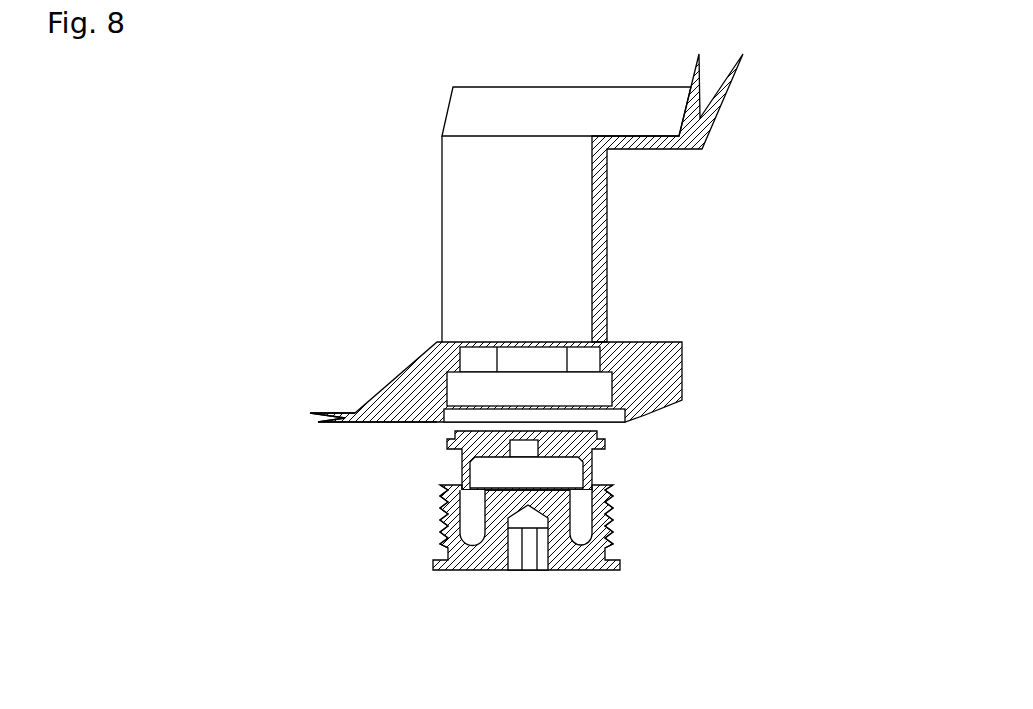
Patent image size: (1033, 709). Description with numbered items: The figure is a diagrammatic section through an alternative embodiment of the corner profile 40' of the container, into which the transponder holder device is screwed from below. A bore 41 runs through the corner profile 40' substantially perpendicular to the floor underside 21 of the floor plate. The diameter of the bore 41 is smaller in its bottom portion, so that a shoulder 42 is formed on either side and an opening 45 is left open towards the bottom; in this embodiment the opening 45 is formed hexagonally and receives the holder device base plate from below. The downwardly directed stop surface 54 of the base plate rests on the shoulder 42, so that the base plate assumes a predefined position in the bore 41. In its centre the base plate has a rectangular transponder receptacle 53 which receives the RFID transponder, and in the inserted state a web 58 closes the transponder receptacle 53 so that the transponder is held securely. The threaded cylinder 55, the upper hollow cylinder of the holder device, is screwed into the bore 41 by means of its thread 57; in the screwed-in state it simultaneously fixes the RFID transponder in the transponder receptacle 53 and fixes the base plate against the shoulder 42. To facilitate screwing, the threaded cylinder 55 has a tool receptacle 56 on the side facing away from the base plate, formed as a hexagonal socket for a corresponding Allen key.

The corner profile 40' is at (511, 198).
The opening 45 is at (588, 354).
The shoulder 42 is at (608, 363).
The bore 41 is at (602, 399).
The stop surface 54 is at (443, 418).
The floor underside 21 is at (362, 436).
The transponder receptacle 53 is at (527, 443).
The threaded cylinder 55 is at (595, 553).
The thread 57 is at (427, 516).
The web 58 is at (555, 499).
The tool receptacle 56 is at (533, 557).